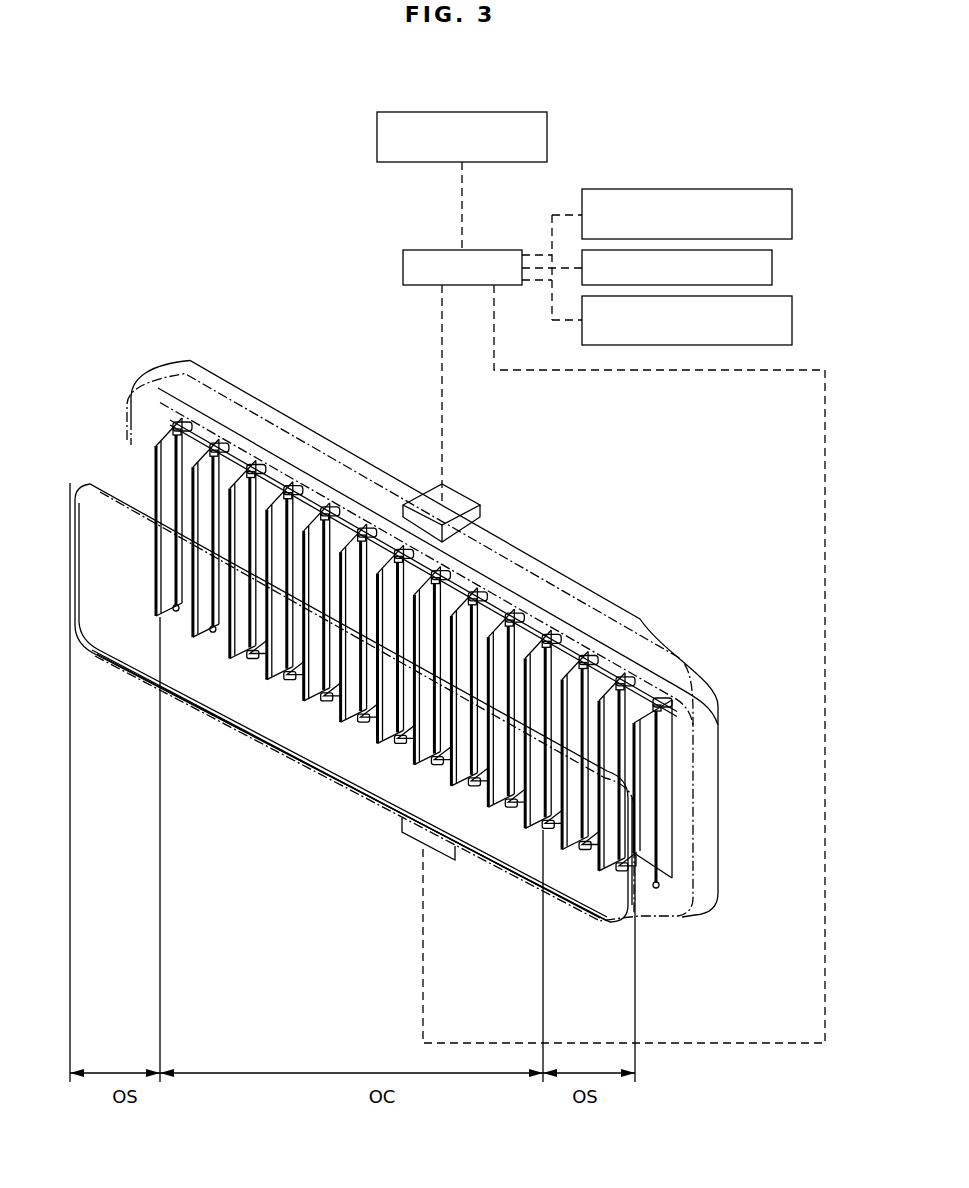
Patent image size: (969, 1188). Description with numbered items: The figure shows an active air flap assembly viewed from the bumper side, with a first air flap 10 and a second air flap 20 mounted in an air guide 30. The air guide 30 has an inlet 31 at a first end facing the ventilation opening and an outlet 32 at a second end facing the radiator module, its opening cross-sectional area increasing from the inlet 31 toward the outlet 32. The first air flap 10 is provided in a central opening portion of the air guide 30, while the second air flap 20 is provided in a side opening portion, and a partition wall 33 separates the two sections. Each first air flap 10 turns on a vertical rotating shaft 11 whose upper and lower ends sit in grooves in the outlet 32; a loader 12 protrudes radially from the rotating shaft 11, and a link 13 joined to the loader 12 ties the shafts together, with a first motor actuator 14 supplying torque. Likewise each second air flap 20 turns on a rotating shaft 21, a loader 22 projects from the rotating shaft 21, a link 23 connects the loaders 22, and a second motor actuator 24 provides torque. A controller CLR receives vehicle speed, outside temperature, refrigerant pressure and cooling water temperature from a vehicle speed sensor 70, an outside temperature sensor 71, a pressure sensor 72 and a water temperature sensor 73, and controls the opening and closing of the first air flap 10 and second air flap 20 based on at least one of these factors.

The vehicle speed sensor 70 is at (447, 111).
The outside temperature sensor 71 is at (740, 188).
The pressure sensor 72 is at (772, 267).
The water temperature sensor 73 is at (792, 322).
The controller CLR is at (412, 249).
The air guide 30 is at (152, 378).
The outlet 32 is at (293, 433).
The inlet 31 is at (600, 922).
The partition wall 33 is at (183, 665).
The link 23 is at (497, 603).
The loader 22 is at (630, 680).
The rotating shaft 21 is at (660, 748).
The second air flap 20 is at (155, 506).
The second motor actuator 24 is at (458, 497).
The first motor actuator 14 is at (405, 840).
The first air flap 10 is at (388, 707).
The rotating shaft 11 is at (322, 660).
The loader 12 is at (283, 677).
The link 13 is at (522, 822).